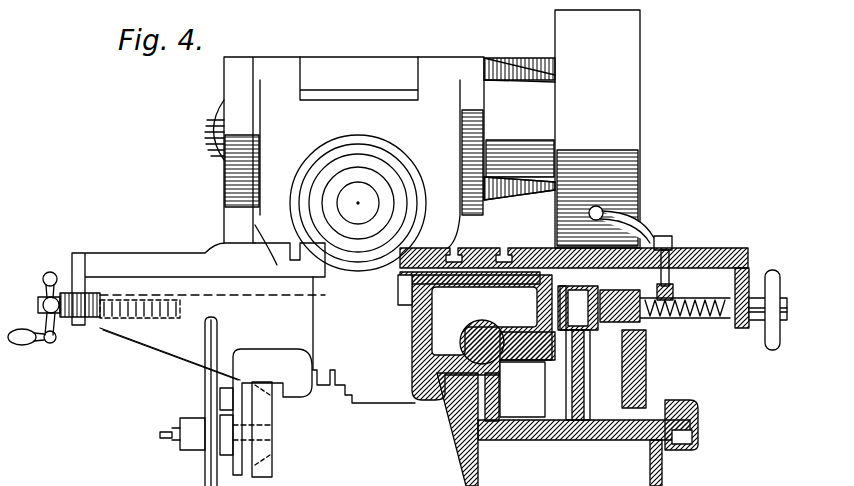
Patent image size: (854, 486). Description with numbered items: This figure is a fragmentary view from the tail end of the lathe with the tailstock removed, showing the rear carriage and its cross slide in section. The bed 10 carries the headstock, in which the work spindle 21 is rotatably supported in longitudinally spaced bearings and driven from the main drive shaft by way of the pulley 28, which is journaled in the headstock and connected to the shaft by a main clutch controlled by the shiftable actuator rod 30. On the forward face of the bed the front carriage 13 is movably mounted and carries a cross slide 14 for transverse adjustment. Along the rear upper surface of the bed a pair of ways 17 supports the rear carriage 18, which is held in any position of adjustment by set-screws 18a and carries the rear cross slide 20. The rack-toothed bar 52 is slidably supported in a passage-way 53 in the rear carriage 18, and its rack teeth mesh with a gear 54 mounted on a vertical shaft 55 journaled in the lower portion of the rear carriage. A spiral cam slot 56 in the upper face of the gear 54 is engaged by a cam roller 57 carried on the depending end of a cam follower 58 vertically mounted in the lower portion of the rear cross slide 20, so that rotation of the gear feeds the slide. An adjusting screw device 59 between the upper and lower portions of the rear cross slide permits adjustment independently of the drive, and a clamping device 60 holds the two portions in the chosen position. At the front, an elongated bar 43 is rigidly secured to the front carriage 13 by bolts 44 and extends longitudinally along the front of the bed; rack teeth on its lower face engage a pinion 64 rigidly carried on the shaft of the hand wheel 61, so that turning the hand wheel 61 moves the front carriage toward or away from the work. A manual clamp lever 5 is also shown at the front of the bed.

The clamping handle 5 is at (47, 288).
The bed 10 is at (478, 472).
The front carriage 13 is at (168, 322).
The cross slide 14 is at (130, 262).
The ways 17 is at (455, 402).
The rear carriage 18 is at (418, 342).
The set-screws 18a is at (690, 440).
The rear cross slide 20 is at (478, 247).
The work spindle 21 is at (367, 197).
The pulley 28 is at (613, 85).
The shiftable actuator rod 30 is at (143, 478).
The elongated bar 43 is at (262, 397).
The bolts 44 is at (218, 398).
The bar 52 is at (470, 338).
The passage-way 53 is at (483, 330).
The gear 54 is at (515, 340).
The vertical shaft 55 is at (557, 374).
The spiral cam slot 56 is at (646, 378).
The cam roller 57 is at (650, 358).
The cam follower 58 is at (536, 250).
The adjusting screw device 59 is at (768, 340).
The clamping device 60 is at (663, 236).
The hand wheel 61 is at (208, 350).
The pinion 64 is at (262, 420).